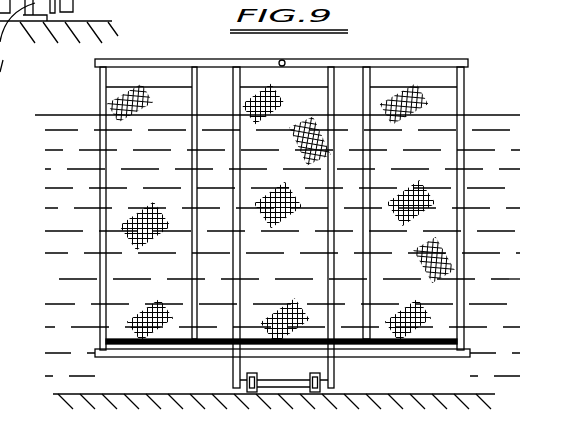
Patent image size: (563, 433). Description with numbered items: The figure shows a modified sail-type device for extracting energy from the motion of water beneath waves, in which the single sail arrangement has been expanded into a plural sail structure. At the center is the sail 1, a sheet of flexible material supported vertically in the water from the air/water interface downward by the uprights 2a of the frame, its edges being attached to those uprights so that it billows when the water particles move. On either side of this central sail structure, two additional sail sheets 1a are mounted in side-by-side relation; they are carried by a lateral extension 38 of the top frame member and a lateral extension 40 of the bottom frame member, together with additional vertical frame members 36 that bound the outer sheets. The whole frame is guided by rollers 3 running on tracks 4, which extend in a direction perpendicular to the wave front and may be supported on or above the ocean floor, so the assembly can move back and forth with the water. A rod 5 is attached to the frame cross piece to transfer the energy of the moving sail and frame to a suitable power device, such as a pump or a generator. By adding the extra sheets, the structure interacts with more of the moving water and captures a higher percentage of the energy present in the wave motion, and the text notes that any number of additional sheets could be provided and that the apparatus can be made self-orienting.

The sail 1 is at (312, 100).
The additional sail sheets 1a is at (160, 98).
The uprights 2a is at (230, 198).
The rollers 3 is at (245, 381).
The tracks 4 is at (310, 381).
The rod 5 is at (283, 60).
The additional vertical frame members 36 is at (98, 242).
The lateral extension of the top frame member 38 is at (220, 62).
The lateral extension of the bottom frame member 40 is at (143, 350).